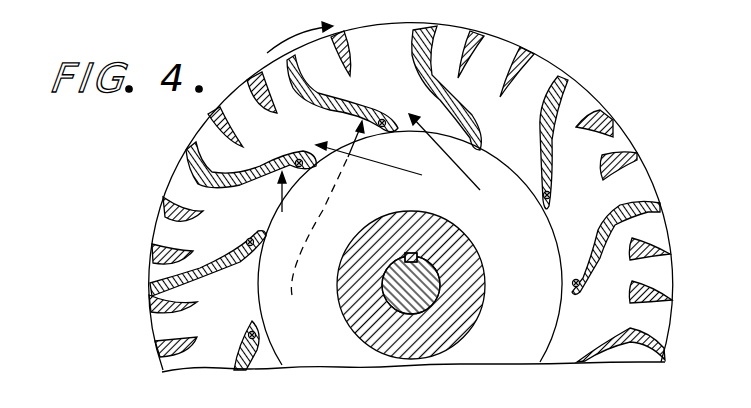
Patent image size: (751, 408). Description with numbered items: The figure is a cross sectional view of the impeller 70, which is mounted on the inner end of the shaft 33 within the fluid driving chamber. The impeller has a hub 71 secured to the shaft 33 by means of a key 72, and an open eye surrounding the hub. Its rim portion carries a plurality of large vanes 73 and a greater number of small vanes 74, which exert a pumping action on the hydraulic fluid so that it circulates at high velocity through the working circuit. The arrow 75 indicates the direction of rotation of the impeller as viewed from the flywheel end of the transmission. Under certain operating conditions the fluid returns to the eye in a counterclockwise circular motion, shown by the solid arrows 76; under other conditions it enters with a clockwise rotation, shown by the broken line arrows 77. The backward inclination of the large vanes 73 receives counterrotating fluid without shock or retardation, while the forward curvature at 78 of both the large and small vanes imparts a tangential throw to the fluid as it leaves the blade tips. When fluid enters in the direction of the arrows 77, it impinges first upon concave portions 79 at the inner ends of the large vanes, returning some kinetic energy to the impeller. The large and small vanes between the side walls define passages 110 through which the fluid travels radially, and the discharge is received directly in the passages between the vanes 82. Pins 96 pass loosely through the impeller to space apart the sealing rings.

The impeller 70 is at (673, 225).
The hub 71 is at (477, 322).
The shaft 33 is at (435, 282).
The key 72 is at (410, 253).
The large vanes 73 is at (648, 203).
The small vanes 74 is at (626, 158).
The arrow 75 is at (291, 42).
The solid arrows 76 is at (453, 160).
The broken line arrows 77 is at (325, 210).
The forward curvature 78 is at (205, 122).
The concave portions 79 is at (347, 116).
The pins 96 is at (546, 194).
The passages 110 is at (408, 42).
The vanes 82 is at (95, 0).